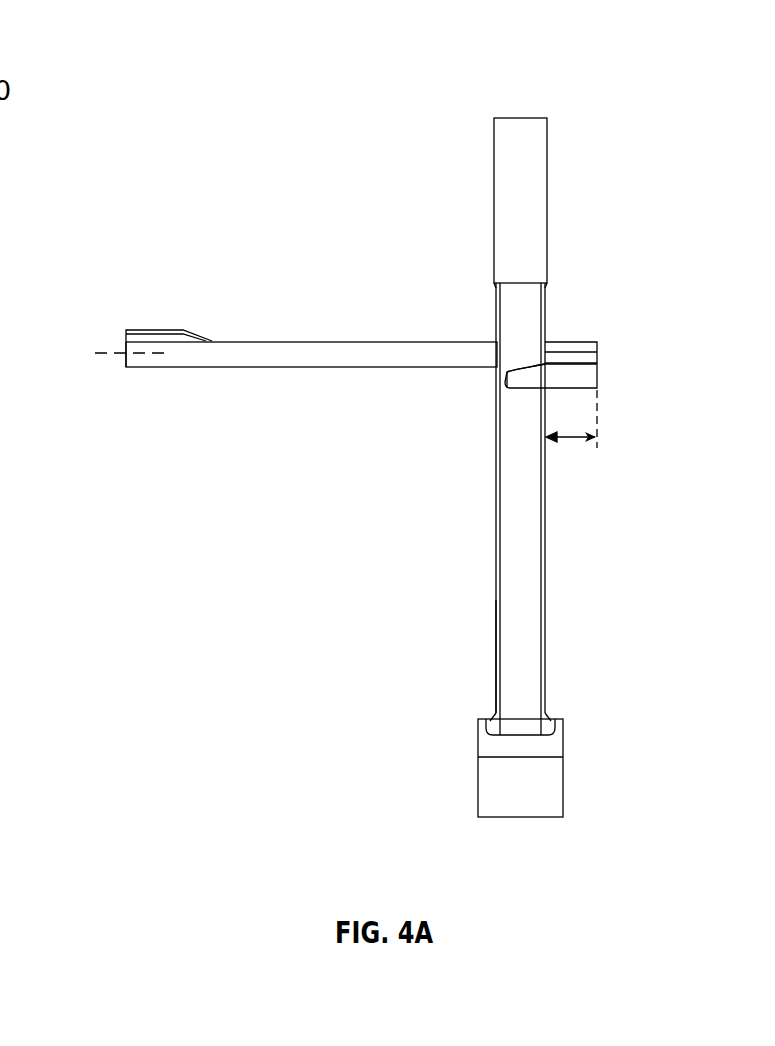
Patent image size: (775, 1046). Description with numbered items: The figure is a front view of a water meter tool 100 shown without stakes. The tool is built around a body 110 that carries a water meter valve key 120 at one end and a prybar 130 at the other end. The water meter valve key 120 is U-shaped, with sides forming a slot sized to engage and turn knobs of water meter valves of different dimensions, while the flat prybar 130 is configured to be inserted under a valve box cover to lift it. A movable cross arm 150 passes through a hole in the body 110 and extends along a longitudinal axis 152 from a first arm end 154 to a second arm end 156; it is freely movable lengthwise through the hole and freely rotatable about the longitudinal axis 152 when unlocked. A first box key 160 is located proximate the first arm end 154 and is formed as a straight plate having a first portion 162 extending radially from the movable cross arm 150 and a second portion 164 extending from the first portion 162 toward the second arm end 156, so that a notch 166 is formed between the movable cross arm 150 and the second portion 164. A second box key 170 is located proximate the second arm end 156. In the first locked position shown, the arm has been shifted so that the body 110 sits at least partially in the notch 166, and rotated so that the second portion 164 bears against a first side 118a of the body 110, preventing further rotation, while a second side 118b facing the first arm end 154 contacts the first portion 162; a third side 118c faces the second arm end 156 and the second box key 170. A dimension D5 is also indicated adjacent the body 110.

The water meter tool 100 is at (648, 126).
The body 110 is at (510, 509).
The first side 118a is at (517, 453).
The second side 118b is at (545, 568).
The third side 118c is at (497, 637).
The water meter valve key 120 is at (456, 795).
The prybar 130 is at (532, 190).
The movable cross arm 150 is at (271, 363).
The longitudinal axis 152 is at (97, 355).
The first arm end 154 is at (598, 352).
The second arm end 156 is at (126, 350).
The first box key 160 is at (583, 327).
The first portion 162 is at (587, 376).
The second portion 164 is at (521, 378).
The notch 166 is at (525, 372).
The second box key 170 is at (151, 321).
The distance D5 is at (571, 433).